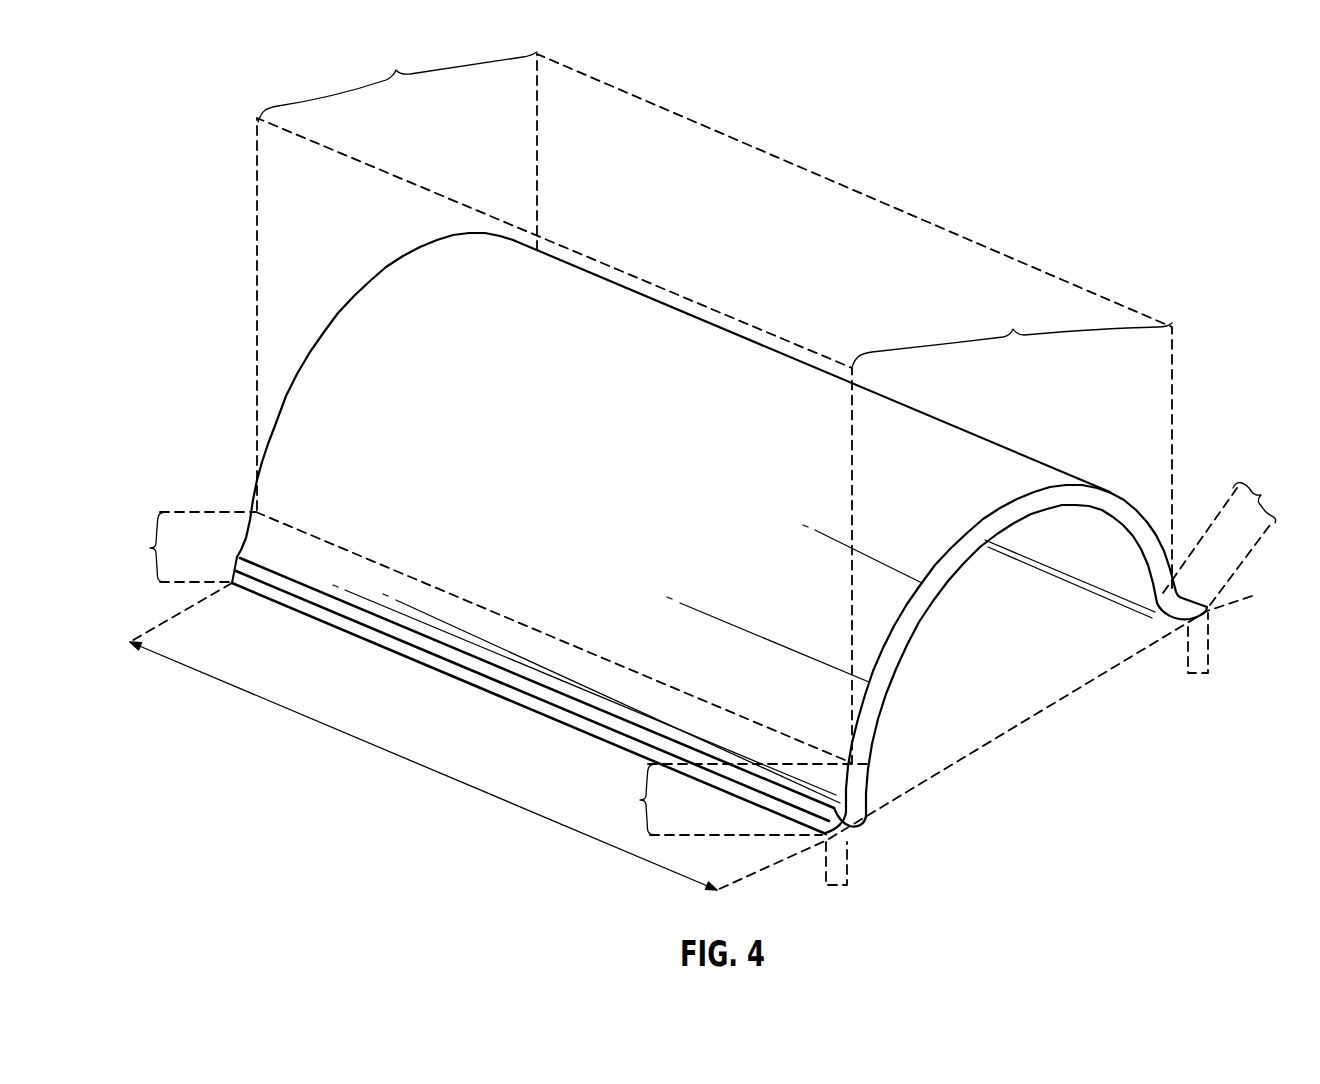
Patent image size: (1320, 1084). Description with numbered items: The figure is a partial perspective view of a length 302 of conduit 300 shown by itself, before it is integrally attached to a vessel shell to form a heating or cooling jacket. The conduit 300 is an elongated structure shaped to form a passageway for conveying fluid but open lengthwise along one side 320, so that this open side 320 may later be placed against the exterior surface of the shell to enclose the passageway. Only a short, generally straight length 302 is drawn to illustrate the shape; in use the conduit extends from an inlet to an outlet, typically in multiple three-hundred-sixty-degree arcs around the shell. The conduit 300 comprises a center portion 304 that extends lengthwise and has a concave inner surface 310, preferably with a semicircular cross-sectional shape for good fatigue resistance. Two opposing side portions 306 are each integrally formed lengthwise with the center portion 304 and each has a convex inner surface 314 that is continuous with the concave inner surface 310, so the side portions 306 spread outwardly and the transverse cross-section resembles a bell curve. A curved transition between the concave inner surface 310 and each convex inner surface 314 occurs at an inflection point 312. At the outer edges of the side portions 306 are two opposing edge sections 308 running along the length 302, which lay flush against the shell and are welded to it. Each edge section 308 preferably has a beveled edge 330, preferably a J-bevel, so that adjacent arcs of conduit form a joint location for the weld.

The conduit 300 is at (623, 300).
The length of conduit 302 is at (388, 752).
The center portion 304 is at (715, 201).
The side portions 306 is at (702, 650).
The edge sections 308 is at (1017, 768).
The concave inner surface 310 is at (926, 623).
The inflection point 312 is at (1161, 621).
The convex inner surface 314 is at (1159, 632).
The open side 320 is at (984, 692).
The beveled edge 330 is at (461, 664).